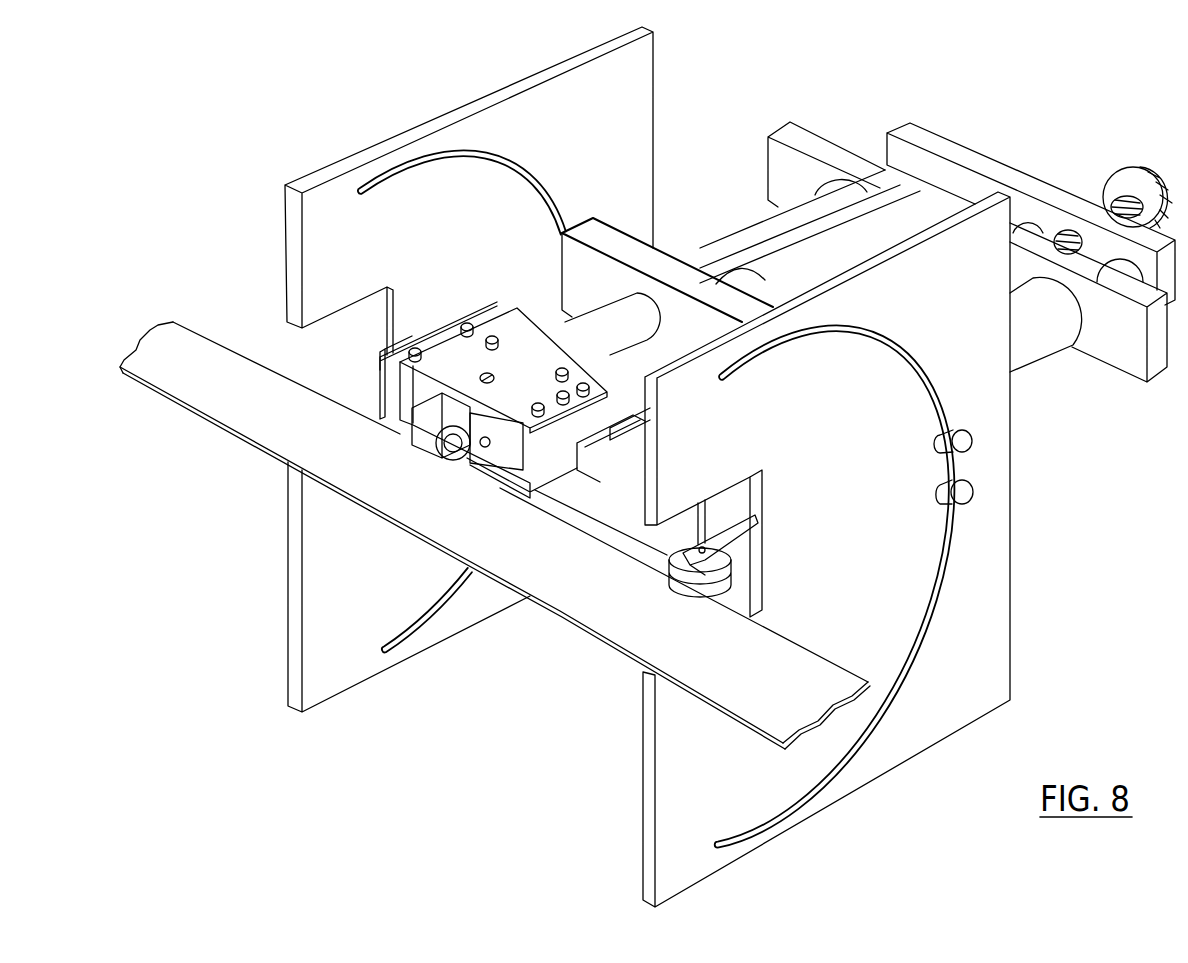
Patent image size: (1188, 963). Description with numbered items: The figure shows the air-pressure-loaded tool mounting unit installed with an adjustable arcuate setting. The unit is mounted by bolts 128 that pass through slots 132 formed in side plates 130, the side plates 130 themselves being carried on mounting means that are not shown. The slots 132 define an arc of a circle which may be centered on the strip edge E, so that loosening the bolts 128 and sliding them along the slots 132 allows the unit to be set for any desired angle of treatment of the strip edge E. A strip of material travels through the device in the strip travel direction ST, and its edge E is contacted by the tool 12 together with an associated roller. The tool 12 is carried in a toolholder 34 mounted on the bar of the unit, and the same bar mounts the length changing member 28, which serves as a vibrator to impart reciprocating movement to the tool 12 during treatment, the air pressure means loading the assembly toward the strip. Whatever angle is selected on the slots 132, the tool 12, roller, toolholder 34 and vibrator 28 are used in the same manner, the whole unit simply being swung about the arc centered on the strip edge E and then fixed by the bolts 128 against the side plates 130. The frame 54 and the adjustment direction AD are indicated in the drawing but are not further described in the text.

The side plates 130 is at (518, 102).
The slots 132 is at (537, 183).
The frame with rollers 54 is at (861, 253).
The bolts 128 is at (942, 438).
The toolholder 34 is at (379, 410).
The tool 12 is at (415, 448).
The length changing member 28 is at (618, 500).
The strip edge E is at (825, 657).
The strip travel direction ST is at (478, 525).
The adjustment direction AD is at (1012, 150).